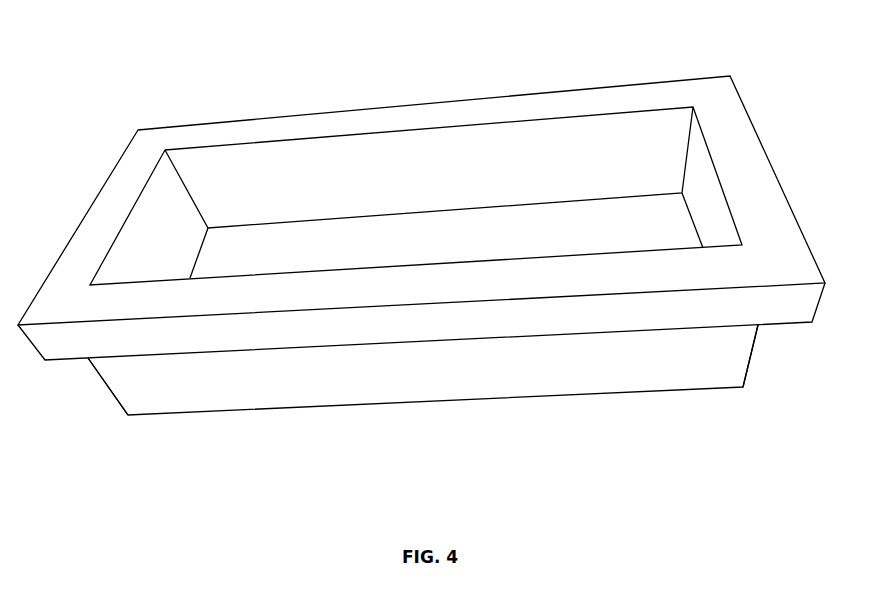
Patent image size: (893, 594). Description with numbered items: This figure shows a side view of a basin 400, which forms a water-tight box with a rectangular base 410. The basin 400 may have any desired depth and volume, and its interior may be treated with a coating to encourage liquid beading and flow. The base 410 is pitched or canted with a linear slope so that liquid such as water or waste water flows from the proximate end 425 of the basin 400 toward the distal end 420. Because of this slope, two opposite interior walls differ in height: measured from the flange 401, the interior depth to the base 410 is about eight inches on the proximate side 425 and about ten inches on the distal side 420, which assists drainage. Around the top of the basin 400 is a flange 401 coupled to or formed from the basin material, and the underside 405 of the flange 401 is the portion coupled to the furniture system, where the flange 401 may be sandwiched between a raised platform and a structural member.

The basin 400 is at (177, 393).
The flange 401 is at (773, 236).
The underside of flange 405 is at (780, 327).
The base 410 is at (528, 230).
The distal end 420 is at (127, 415).
The proximate end 425 is at (743, 387).